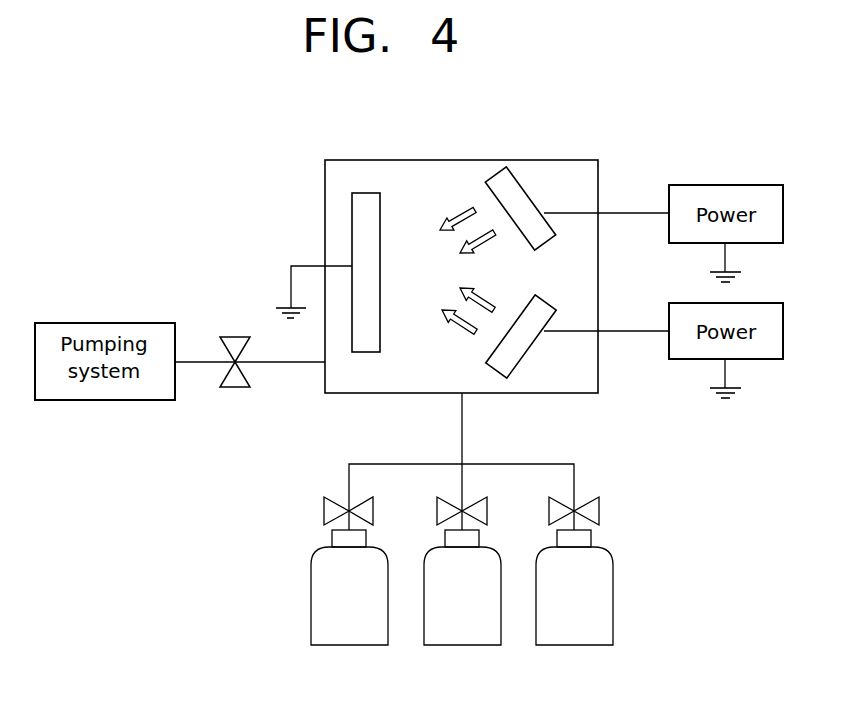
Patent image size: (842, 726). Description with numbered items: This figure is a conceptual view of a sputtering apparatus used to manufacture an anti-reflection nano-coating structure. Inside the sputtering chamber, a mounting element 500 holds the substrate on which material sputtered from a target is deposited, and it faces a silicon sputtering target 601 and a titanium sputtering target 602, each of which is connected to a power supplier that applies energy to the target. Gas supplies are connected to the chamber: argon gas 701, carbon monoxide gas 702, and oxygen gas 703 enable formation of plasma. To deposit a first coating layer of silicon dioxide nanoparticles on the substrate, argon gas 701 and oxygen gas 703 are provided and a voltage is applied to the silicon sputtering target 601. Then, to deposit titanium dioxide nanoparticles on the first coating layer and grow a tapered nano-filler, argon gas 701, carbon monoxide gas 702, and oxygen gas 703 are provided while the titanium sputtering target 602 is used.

The mounting element 500 is at (352, 217).
The silicon sputtering target 601 is at (517, 183).
The titanium sputtering target 602 is at (525, 347).
The argon gas 701 is at (349, 645).
The carbon monoxide gas 702 is at (462, 645).
The oxygen gas 703 is at (574, 645).